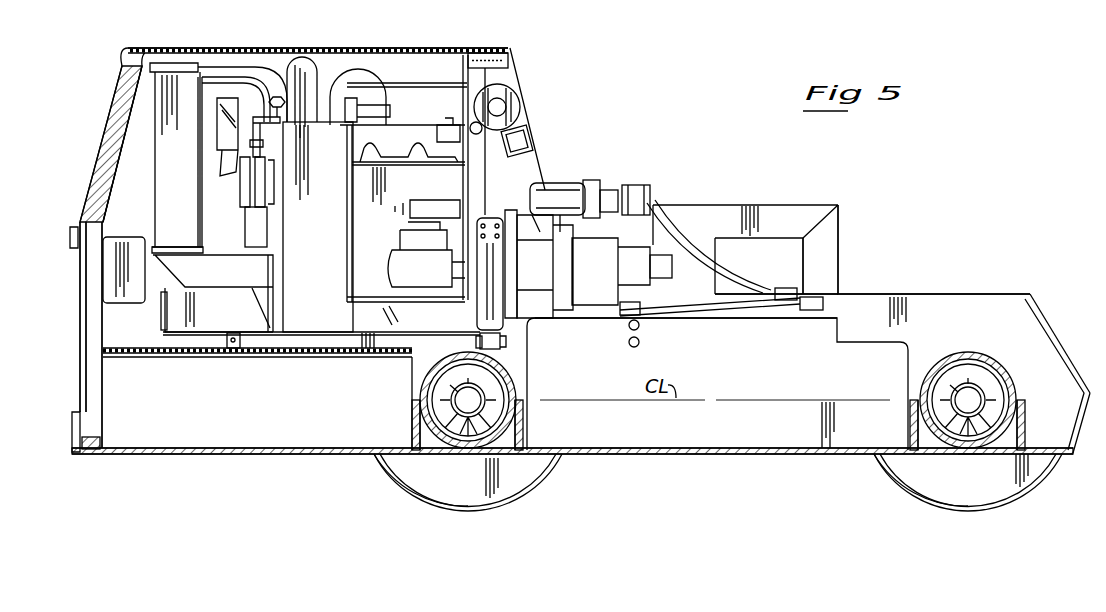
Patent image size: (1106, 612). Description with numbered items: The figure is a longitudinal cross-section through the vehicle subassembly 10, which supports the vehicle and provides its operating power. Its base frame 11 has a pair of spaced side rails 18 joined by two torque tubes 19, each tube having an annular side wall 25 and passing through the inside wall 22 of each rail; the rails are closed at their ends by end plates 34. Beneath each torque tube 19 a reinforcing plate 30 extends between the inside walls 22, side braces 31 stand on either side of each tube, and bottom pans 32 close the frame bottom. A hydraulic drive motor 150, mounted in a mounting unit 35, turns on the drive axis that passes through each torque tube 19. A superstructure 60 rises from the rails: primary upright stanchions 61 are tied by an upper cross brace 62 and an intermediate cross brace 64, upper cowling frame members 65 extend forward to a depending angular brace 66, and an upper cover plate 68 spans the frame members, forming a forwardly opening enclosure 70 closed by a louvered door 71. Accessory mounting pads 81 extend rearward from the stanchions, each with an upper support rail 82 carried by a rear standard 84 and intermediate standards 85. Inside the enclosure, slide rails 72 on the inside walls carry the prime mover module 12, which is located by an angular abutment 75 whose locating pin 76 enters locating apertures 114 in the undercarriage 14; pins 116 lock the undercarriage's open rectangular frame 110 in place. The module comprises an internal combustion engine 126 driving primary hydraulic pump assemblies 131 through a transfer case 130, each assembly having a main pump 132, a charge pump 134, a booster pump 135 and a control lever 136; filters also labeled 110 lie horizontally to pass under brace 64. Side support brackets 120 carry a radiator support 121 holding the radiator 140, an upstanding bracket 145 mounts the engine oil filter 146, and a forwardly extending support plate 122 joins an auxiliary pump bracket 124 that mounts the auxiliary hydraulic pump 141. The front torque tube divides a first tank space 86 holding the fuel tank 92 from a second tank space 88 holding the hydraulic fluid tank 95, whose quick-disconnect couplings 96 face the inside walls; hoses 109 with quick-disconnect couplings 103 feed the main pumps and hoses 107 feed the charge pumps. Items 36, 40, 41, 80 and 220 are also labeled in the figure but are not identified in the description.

The vehicle subassembly 10 is at (656, 112).
The base frame 11 is at (871, 283).
The prime mover module 12 is at (400, 132).
The undercarriage 14 is at (320, 345).
The side rails 18 is at (1032, 293).
The torque tubes 19 is at (418, 378).
The inside wall 22 is at (1001, 321).
The annular side wall 25 is at (431, 397).
The reinforcing plate 30 is at (977, 455).
The side braces 31 is at (411, 430).
The bottom pans 32 is at (674, 455).
The end plates 34 is at (1048, 310).
The mounting units 35 is at (390, 477).
The wheel well 36 is at (474, 481).
The tire tread 40 is at (554, 468).
The tire sidewall 41 is at (530, 480).
The superstructure 60 is at (533, 42).
The primary upright stanchions 61 is at (512, 82).
The upper cross brace 62 is at (498, 52).
The intermediate cross brace 64 is at (531, 138).
The upper cowling frame members 65 is at (340, 66).
The depending angular brace 66 is at (143, 100).
The upper cover plate 68 is at (258, 66).
The forwardly opening enclosure 70 is at (141, 130).
The louvered door 71 is at (103, 159).
The slide rails 72 is at (160, 355).
The angular abutment 75 is at (506, 343).
The locating pin 76 is at (500, 349).
The air outlet 80 is at (519, 105).
The accessory mounting pads 81 is at (829, 207).
The upper support rail 82 is at (772, 212).
The standard 84 is at (827, 262).
The standards 85 is at (735, 222).
The first tank space 86 is at (172, 444).
The second tank space 88 is at (792, 437).
The fuel tank 92 is at (267, 434).
The hydraulic fluid tank 95 is at (742, 432).
The quick-disconnect couplings 96 is at (627, 341).
The quick-disconnect couplings 103 is at (655, 316).
The hoses 107 is at (768, 302).
The hoses 109 is at (725, 302).
The open rectangular frame 110 is at (603, 189).
The locating apertures 114 is at (480, 332).
The pins 116 is at (236, 355).
The side support brackets 120 is at (233, 280).
The radiator support 121 is at (184, 248).
The forwardly extending support plate 122 is at (233, 321).
The auxiliary pump bracket 124 is at (163, 332).
The internal combustion engine 126 is at (385, 218).
The transfer case 130 is at (537, 184).
The primary hydraulic pump assemblies 131 is at (590, 178).
The main pump 132 is at (634, 186).
The charge pump 134 is at (705, 243).
The booster pump 135 is at (674, 266).
The control lever 136 is at (583, 266).
The radiator 140 is at (186, 63).
The auxiliary hydraulic pump 141 is at (113, 303).
The upstanding bracket 145 is at (264, 214).
The engine oil filter 146 is at (262, 233).
The hydraulic drive motor 150 is at (499, 397).
The hose 220 is at (650, 208).